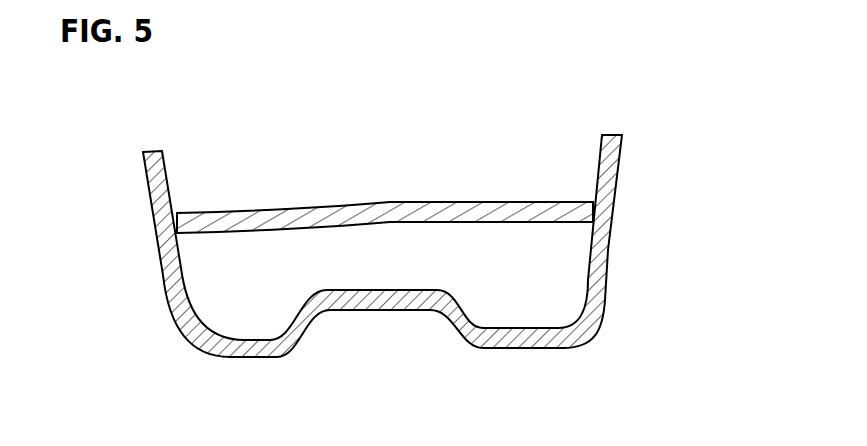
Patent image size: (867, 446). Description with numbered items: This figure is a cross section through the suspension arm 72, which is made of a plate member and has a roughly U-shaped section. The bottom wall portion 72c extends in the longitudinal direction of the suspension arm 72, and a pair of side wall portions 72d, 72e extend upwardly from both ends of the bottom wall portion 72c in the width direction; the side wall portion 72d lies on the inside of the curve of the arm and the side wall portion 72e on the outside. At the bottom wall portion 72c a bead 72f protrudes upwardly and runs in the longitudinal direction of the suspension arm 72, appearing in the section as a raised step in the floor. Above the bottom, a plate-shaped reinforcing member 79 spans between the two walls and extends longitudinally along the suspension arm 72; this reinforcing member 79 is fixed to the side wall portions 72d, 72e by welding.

The suspension arm 72 is at (635, 153).
The bottom wall portion 72c is at (243, 360).
The side wall portion 72d is at (158, 255).
The side wall portion 72e is at (615, 233).
The bead 72f is at (387, 311).
The reinforcing member 79 is at (417, 200).